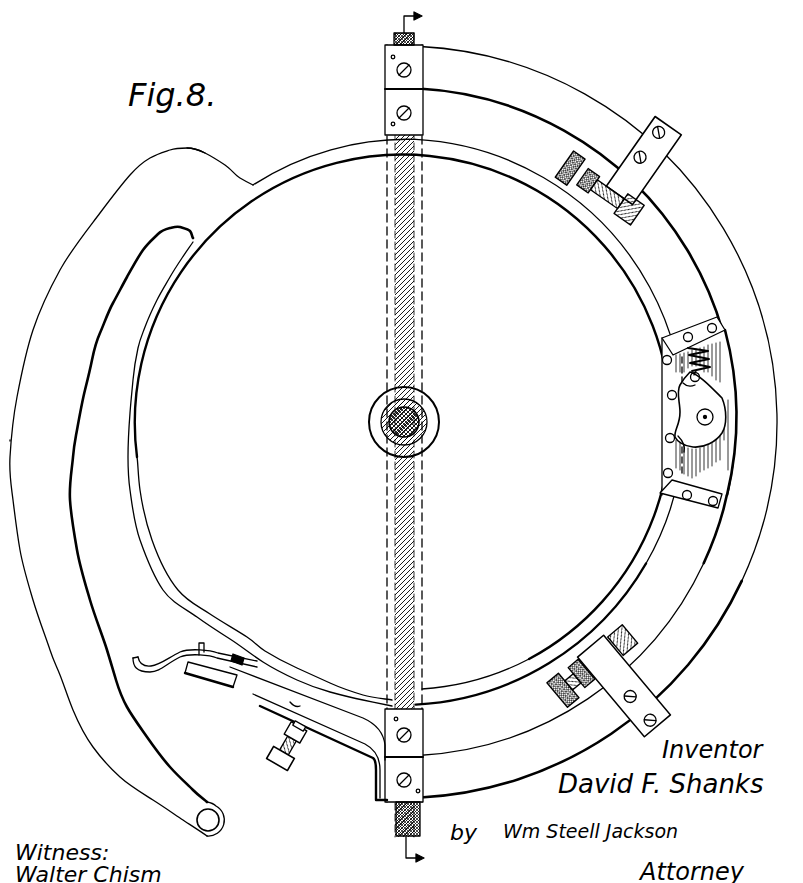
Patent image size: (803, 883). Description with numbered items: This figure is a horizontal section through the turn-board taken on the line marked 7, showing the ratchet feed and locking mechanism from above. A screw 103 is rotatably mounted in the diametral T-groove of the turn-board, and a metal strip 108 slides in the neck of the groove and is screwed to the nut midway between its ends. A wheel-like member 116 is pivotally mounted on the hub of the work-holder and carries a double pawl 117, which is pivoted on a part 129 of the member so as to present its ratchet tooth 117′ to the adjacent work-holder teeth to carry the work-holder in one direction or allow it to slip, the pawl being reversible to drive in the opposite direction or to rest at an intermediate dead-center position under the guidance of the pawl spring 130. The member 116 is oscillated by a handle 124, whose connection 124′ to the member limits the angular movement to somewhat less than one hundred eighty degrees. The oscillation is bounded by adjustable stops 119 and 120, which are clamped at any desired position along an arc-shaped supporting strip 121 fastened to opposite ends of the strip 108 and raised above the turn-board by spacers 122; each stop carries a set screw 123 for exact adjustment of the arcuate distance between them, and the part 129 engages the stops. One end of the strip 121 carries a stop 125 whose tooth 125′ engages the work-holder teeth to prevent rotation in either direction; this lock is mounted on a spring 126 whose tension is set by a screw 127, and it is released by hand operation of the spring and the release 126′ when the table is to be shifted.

The section line 7- 7 is at (422, 441).
The screw 103 is at (416, 302).
The metal strip 108 is at (416, 230).
The wheel-like member 116 is at (403, 427).
The double pawl 117 is at (706, 396).
The ratchet tooth 117′ is at (683, 373).
The adjustable stop 119 is at (639, 161).
The adjustable stop 120 is at (624, 686).
The arc-shaped supporting strip 121 is at (747, 593).
The spacers 122 is at (386, 103).
The adjustable set screw 123 is at (613, 219).
The handle 124 is at (220, 820).
The connection 124′ is at (232, 175).
The stop 125 is at (217, 676).
The tooth 125′ is at (216, 668).
The spring 126 is at (292, 700).
The spring release 126′ is at (141, 660).
The screw 127 is at (276, 731).
The pivot part 129 is at (665, 458).
The spring 130 is at (712, 362).